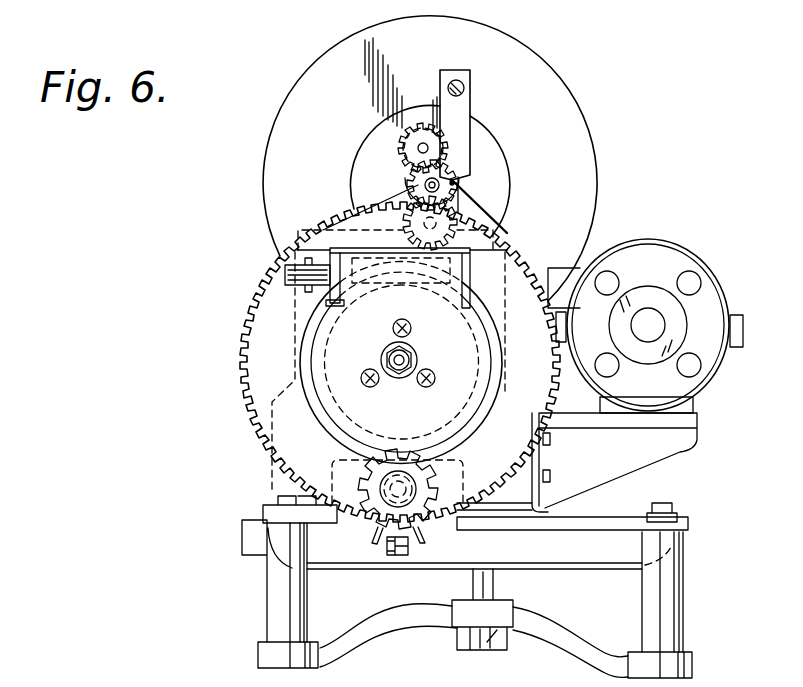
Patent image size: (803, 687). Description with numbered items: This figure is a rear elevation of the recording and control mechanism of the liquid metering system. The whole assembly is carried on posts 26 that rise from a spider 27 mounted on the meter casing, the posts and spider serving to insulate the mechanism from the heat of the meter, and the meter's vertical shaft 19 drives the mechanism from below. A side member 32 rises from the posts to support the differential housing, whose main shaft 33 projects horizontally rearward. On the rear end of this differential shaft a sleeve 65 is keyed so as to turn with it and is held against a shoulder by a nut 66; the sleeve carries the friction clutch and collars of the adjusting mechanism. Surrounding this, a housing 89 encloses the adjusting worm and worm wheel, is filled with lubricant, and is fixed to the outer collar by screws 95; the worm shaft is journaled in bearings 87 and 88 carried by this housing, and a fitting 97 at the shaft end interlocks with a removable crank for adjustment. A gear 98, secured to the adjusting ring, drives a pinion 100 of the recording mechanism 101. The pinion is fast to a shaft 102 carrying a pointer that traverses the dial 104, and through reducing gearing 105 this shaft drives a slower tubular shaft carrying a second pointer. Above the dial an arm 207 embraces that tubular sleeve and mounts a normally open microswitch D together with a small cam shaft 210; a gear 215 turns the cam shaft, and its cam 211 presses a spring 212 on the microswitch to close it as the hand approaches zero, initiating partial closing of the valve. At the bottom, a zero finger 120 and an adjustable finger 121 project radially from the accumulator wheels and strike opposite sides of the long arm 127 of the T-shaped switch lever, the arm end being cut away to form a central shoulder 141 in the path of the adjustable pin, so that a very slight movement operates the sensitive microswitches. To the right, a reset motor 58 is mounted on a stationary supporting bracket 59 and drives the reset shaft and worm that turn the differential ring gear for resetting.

The recording mechanism 101 is at (583, 96).
The dial 104 is at (597, 158).
The arm 207 is at (458, 70).
The microswitch D is at (462, 105).
The spring 212 is at (437, 103).
The gear 215 is at (407, 127).
The cam shaft 210 is at (421, 147).
The cam 211 is at (405, 152).
The shaft 102 is at (412, 184).
The pinion 100 is at (454, 183).
The reducing gearing 105 is at (490, 208).
The gear 98 is at (252, 345).
The side member 32 is at (272, 477).
The bearing 88 is at (460, 292).
The bearing 87 is at (350, 288).
The fitting 97 is at (296, 287).
The housing 89 is at (401, 362).
The screws 95 is at (417, 393).
The main shaft 33 is at (414, 355).
The nut 66 is at (373, 357).
The sleeve 65 is at (430, 362).
The zero finger 120 is at (372, 538).
The adjustable finger 121 is at (425, 541).
The central shoulder 141 is at (410, 549).
The long arm 127 is at (398, 556).
The vertical shaft 19 is at (490, 585).
The posts 26 is at (272, 611).
The spider 27 is at (263, 656).
The reset motor 58 is at (668, 249).
The supporting bracket 59 is at (668, 448).